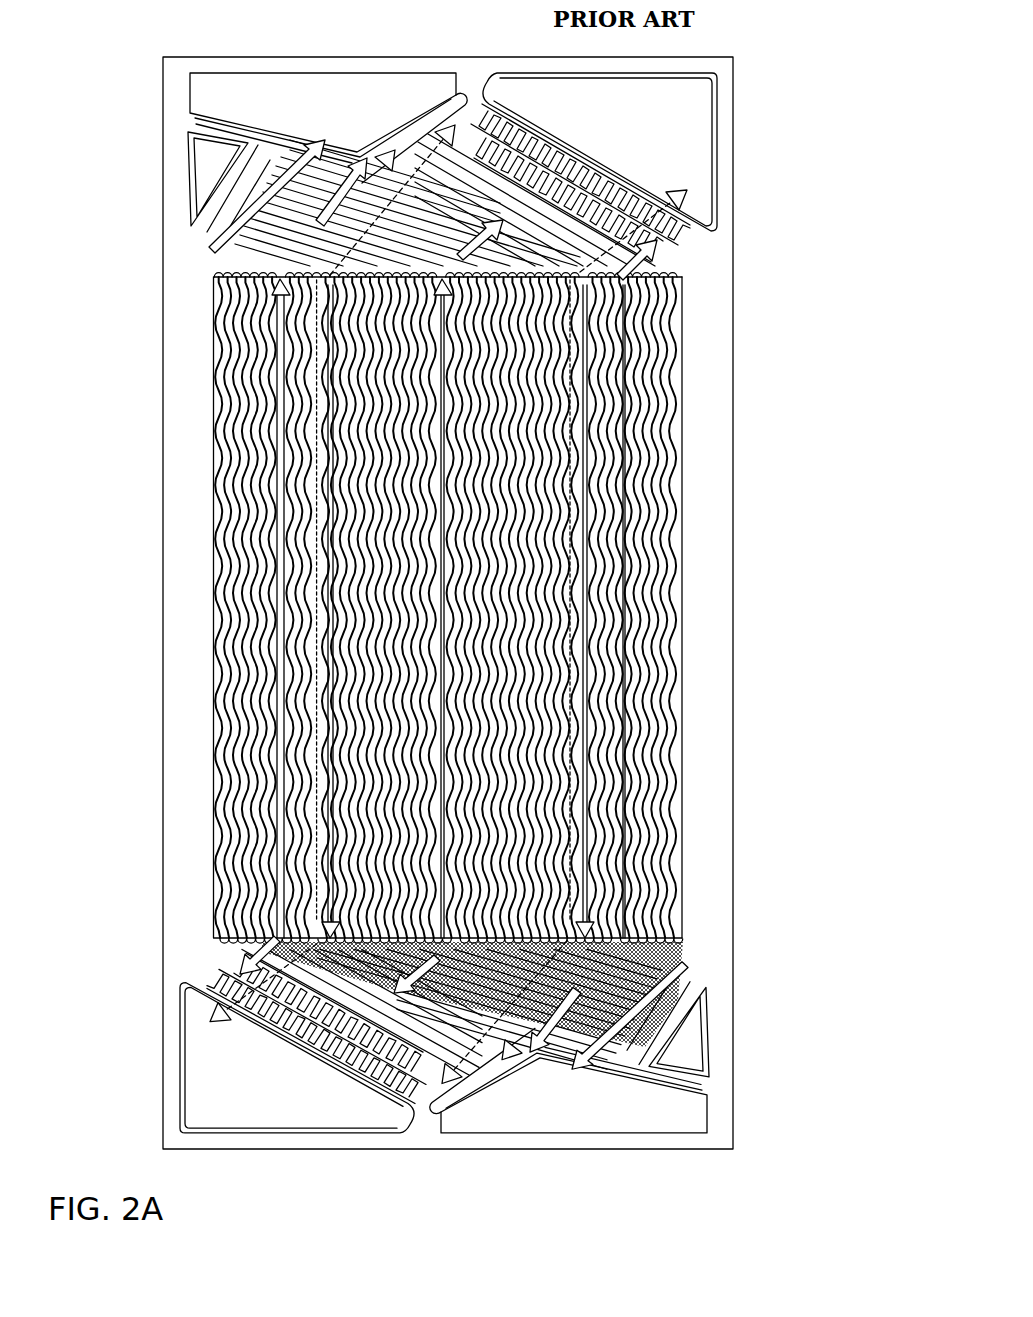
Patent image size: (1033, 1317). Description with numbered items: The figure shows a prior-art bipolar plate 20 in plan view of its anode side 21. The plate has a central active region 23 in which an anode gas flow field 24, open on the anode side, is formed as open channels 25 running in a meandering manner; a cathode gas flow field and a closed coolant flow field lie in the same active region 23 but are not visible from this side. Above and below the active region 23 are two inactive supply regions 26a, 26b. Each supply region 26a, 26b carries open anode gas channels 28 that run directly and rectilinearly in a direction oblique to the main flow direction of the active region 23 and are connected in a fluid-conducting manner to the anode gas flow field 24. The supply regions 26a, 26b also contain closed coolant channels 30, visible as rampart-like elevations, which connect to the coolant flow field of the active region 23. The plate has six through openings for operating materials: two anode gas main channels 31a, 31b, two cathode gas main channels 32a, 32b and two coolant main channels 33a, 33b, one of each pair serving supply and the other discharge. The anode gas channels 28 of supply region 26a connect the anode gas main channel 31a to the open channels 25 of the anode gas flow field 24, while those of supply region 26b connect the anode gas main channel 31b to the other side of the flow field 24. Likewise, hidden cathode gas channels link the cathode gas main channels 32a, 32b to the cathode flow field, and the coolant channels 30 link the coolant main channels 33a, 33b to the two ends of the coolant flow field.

The bipolar plate 20 is at (750, 78).
The anode side 21 is at (510, 607).
The active region 23 is at (690, 509).
The anode gas flow field 24 is at (651, 716).
The open channels 25 is at (664, 580).
The inactive supply region 26a is at (222, 262).
The inactive supply region 26b is at (702, 940).
The anode gas channels 28 is at (282, 234).
The coolant channels 30 is at (558, 222).
The anode gas main channel 31a is at (190, 160).
The anode gas main channel 31b is at (708, 1028).
The cathode gas main channel 32a is at (722, 148).
The cathode gas main channel 32b is at (316, 1131).
The coolant main channel 33a is at (320, 103).
The coolant main channel 33b is at (580, 1131).